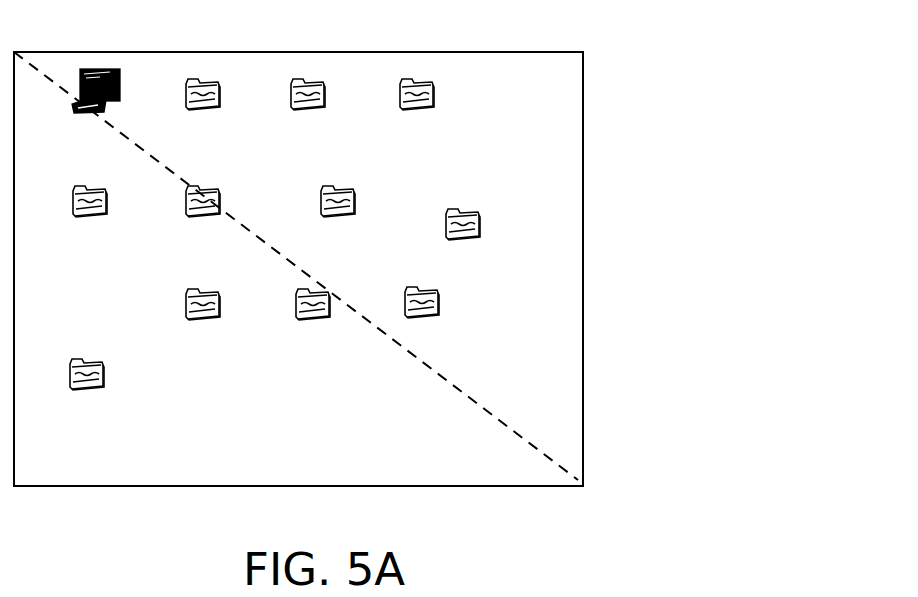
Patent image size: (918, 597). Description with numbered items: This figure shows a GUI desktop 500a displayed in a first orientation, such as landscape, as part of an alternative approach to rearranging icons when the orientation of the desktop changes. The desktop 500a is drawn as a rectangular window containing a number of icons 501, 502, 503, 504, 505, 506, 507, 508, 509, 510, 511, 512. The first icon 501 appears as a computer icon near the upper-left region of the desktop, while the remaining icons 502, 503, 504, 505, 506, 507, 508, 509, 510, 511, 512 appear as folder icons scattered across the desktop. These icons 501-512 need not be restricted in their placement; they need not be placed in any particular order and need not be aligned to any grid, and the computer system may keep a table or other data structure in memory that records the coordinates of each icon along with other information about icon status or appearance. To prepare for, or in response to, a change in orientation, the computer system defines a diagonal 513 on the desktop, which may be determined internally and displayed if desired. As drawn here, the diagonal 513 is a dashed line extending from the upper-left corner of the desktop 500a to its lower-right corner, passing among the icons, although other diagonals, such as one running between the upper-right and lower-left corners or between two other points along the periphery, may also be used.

The GUI desktop 500a is at (298, 243).
The icon 501 is at (96, 109).
The icon 502 is at (89, 221).
The icon 503 is at (87, 395).
The icon 504 is at (202, 115).
The icon 505 is at (202, 222).
The icon 506 is at (202, 324).
The icon 507 is at (307, 116).
The icon 508 is at (337, 222).
The icon 509 is at (312, 324).
The icon 510 is at (416, 115).
The icon 511 is at (462, 243).
The icon 512 is at (421, 321).
The diagonal 513 is at (332, 266).